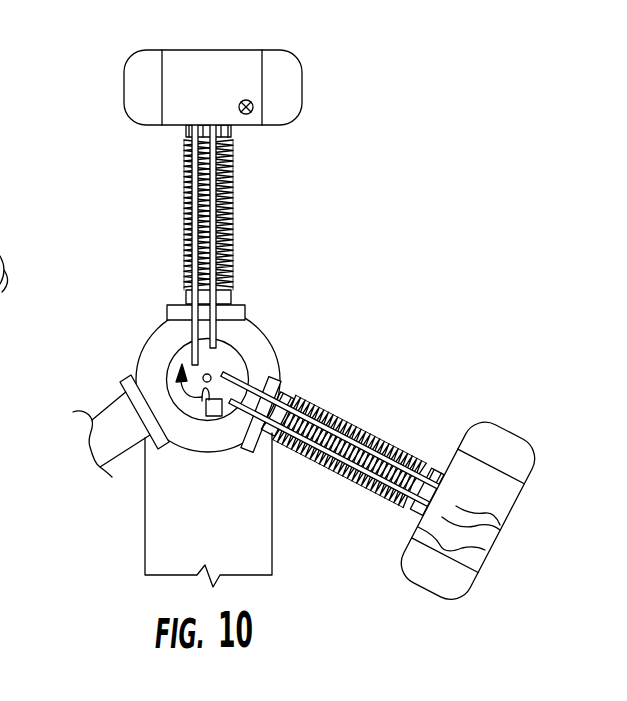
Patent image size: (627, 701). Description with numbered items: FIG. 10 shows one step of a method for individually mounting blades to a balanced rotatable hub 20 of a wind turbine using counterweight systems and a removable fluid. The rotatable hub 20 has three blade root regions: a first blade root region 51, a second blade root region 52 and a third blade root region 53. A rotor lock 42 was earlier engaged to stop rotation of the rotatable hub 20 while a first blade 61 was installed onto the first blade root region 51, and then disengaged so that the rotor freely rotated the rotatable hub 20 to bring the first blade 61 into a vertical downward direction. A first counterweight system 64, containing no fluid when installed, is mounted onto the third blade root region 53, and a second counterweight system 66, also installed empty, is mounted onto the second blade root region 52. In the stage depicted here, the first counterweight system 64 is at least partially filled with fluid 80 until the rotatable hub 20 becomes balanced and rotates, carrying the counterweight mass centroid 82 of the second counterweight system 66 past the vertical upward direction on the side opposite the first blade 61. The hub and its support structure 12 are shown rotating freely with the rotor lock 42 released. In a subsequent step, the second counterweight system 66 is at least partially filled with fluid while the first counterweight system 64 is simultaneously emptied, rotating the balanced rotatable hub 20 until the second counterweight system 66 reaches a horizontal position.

The base 12 is at (160, 528).
The rotatable hub 20 is at (152, 361).
The rotor lock 42 is at (213, 410).
The first blade root region 51 is at (156, 433).
The second blade root region 52 is at (240, 312).
The third blade root region 53 is at (280, 383).
The first blade 61 is at (108, 420).
The first counterweight system 64 is at (447, 613).
The second counterweight system 66 is at (310, 67).
The fluid 80 is at (478, 538).
The counterweight mass centroid 82 is at (250, 100).